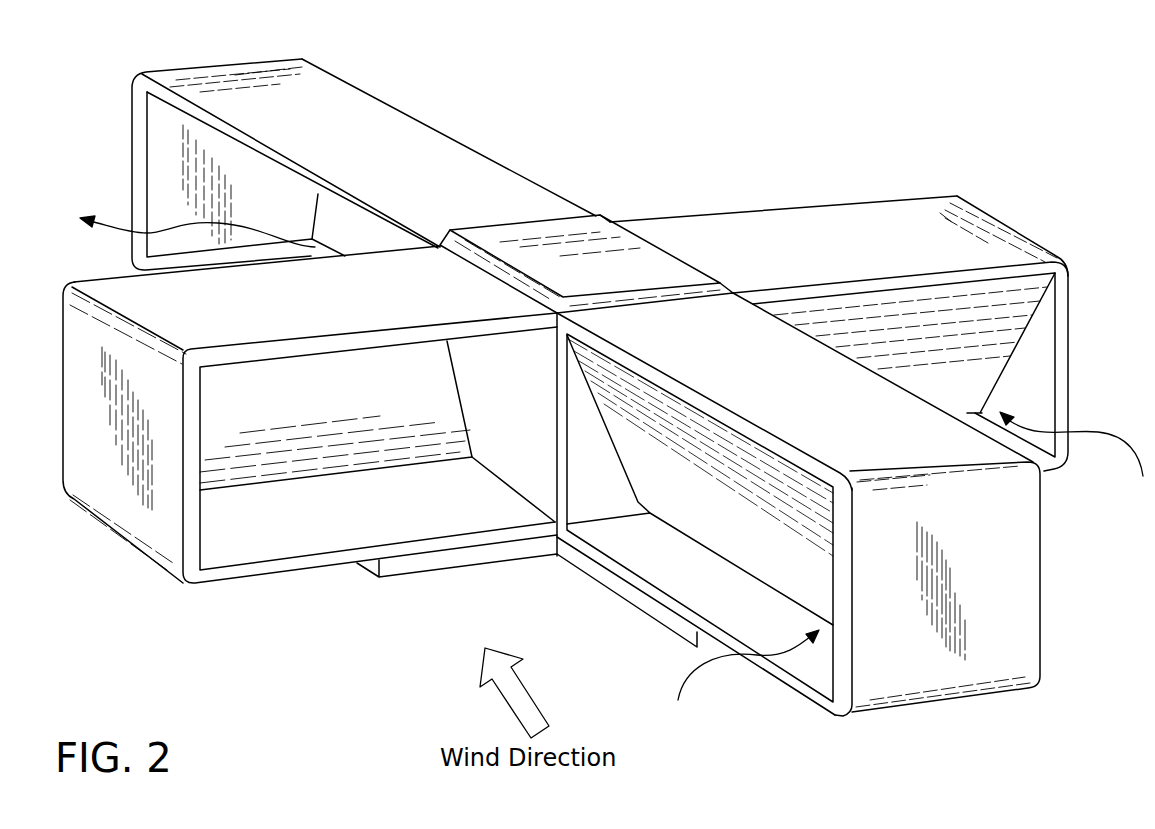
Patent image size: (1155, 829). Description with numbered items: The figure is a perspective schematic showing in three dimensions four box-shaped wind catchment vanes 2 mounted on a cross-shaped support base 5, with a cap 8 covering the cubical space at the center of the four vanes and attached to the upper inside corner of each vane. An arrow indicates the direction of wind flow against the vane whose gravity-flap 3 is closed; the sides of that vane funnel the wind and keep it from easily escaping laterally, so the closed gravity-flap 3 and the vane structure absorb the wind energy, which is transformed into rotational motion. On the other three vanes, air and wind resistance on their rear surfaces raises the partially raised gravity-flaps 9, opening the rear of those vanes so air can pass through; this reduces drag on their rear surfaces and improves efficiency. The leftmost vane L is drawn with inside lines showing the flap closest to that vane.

The wind catchment vane 2 is at (399, 171).
The gravity-flap 3 is at (327, 415).
The support base 5 is at (582, 562).
The cap 8 is at (586, 288).
The partially raised gravity-flap 9 is at (356, 242).
The leftmost vane L is at (132, 512).